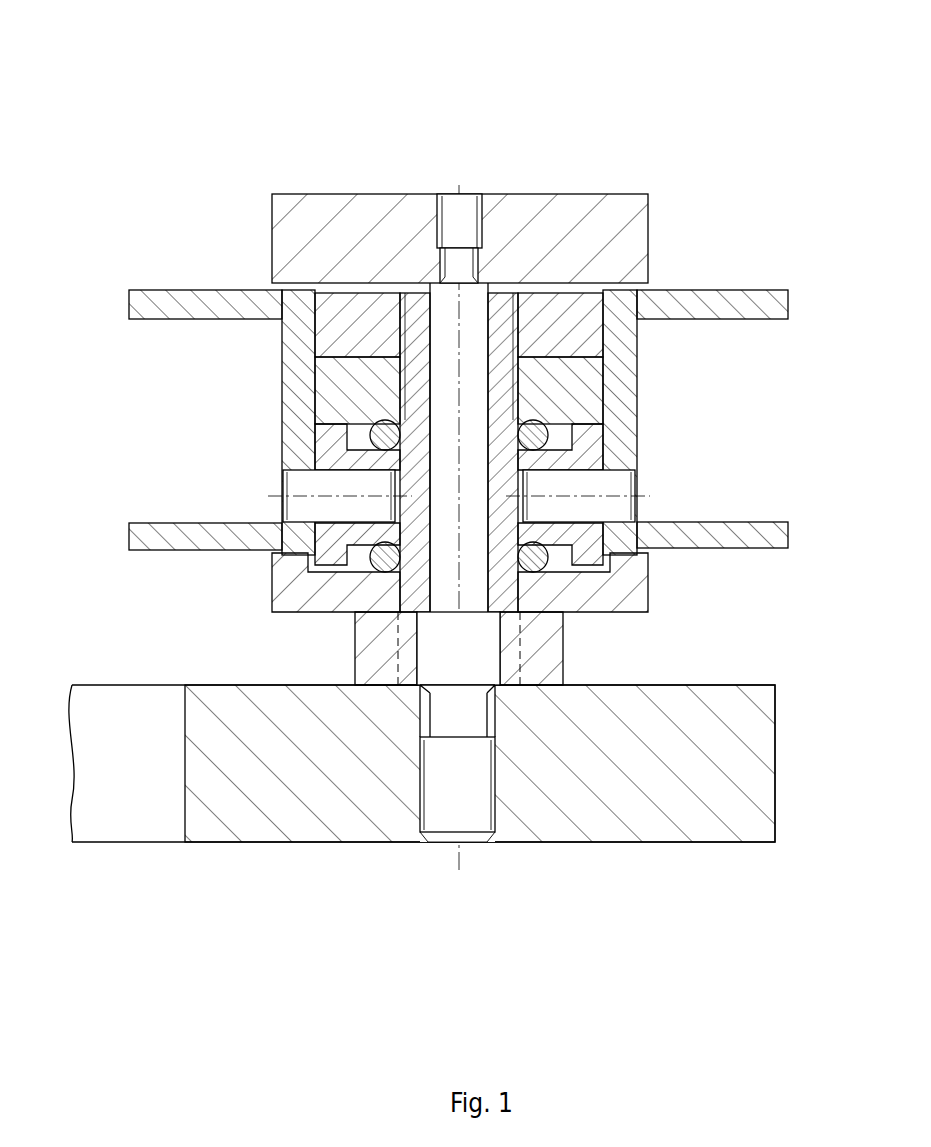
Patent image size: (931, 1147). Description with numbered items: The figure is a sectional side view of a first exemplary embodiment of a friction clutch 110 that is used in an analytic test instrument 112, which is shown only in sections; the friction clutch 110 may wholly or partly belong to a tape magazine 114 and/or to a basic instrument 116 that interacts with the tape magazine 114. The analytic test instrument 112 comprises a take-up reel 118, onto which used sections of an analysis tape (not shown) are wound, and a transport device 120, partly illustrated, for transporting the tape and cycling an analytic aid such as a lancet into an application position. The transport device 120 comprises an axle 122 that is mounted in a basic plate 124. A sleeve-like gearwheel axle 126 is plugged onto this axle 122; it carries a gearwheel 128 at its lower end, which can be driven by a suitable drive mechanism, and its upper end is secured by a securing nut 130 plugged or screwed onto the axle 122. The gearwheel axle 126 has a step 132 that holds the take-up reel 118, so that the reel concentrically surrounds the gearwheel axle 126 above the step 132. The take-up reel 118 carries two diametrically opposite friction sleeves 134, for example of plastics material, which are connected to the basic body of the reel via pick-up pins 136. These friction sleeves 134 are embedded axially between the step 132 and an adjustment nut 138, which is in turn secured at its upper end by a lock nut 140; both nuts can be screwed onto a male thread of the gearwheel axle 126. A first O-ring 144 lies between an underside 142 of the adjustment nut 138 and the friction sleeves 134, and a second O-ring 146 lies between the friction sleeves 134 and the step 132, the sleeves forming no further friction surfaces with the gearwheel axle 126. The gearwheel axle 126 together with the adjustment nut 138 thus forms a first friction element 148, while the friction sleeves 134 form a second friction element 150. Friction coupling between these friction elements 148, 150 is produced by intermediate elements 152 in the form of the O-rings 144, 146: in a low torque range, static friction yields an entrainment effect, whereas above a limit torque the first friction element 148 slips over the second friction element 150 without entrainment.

The friction clutch 110 is at (232, 456).
The analytic test instrument 112 is at (443, 478).
The tape magazine 114 is at (443, 478).
The basic instrument 116 is at (680, 150).
The take-up reel 118 is at (742, 290).
The transport device 120 is at (396, 748).
The axle 122 is at (448, 815).
The basic plate 124 is at (552, 830).
The gearwheel axle 126 is at (637, 587).
The gearwheel 128 is at (532, 656).
The securing nut 130 is at (568, 211).
The step 132 is at (636, 540).
The friction sleeve 134 is at (456, 438).
The pick-up pin 136 is at (298, 490).
The adjustment nut 138 is at (588, 383).
The lock nut 140 is at (587, 330).
The underside of the adjustment nut 142 is at (575, 430).
The first O-ring 144 is at (375, 422).
The second O-ring 146 is at (382, 575).
The first friction element 148 is at (544, 492).
The second friction element 150 is at (330, 445).
The intermediate element 152 is at (379, 512).